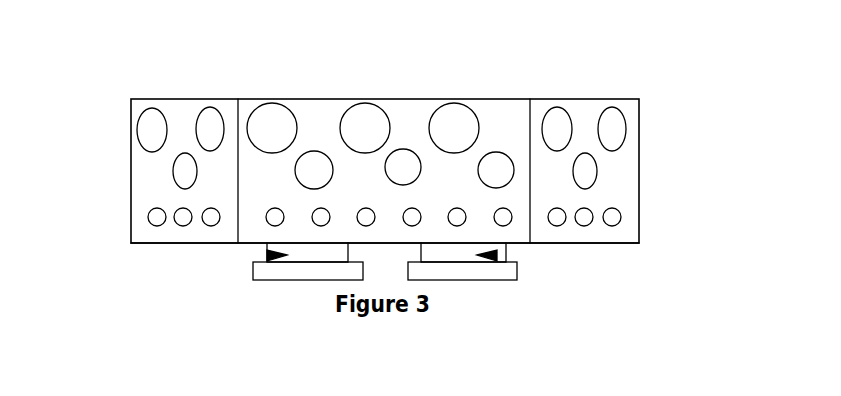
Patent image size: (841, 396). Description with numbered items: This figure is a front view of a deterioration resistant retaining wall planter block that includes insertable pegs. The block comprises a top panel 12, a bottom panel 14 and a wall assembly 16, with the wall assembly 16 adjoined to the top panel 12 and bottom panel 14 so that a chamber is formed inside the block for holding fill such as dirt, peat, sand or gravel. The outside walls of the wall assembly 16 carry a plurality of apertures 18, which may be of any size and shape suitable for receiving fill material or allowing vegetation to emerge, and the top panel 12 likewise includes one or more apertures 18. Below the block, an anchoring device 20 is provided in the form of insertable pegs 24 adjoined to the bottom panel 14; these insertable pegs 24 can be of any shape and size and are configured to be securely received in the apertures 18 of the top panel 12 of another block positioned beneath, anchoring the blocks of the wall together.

The top panel 12 is at (567, 97).
The bottom panel 14 is at (622, 244).
The wall assembly 16 is at (603, 170).
The apertures 18 is at (147, 134).
The anchoring device 20 is at (268, 256).
The insertable pegs 24 is at (293, 272).